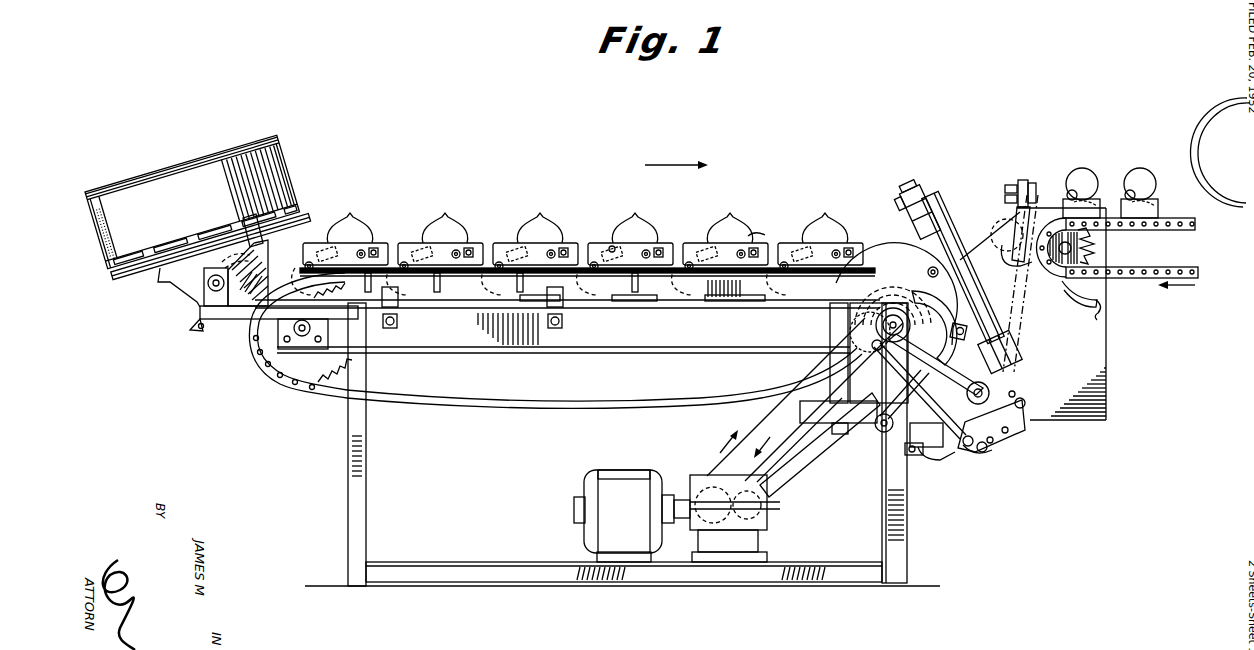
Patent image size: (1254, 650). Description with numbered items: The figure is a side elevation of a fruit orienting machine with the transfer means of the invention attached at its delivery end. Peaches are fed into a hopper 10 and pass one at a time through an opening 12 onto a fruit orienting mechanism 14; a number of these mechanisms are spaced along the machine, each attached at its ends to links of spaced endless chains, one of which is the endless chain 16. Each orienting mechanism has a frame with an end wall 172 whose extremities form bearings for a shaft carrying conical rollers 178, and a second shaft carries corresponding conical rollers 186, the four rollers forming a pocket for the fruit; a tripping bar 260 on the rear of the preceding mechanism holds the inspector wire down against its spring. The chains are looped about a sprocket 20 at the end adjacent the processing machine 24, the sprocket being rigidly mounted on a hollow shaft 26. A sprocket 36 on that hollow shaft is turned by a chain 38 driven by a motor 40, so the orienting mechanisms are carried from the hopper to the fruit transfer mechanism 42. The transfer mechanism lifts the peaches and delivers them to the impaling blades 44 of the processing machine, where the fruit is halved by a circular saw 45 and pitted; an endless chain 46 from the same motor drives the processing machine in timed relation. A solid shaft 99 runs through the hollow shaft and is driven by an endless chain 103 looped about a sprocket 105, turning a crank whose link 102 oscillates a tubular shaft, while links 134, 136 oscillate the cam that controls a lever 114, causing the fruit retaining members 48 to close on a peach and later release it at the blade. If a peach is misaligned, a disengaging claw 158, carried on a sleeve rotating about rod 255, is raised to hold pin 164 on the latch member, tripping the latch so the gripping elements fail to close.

The hopper 10 is at (279, 146).
The opening 12 is at (110, 270).
The fruit orienting mechanism 14 is at (335, 240).
The endless chain 16 is at (336, 387).
The sprocket 20 is at (838, 364).
The fruit processing machine 24 is at (1050, 197).
The hollow shaft 26 is at (856, 315).
The sprocket 36 is at (876, 338).
The chain 38 is at (754, 421).
The motor 40 is at (640, 470).
The fruit transfer mechanism 42 is at (945, 223).
The impaling blades 44 is at (1153, 212).
The circular saw 45 is at (1206, 150).
The endless chain 46 is at (1158, 268).
The fruit retaining members 48 is at (905, 235).
The solid rotatable shaft 99 is at (945, 338).
The link 102 is at (962, 392).
The endless chain 103 is at (805, 470).
The sprocket 105 is at (862, 330).
The lever 114 is at (1015, 424).
The link 134 is at (1018, 388).
The link 136 is at (878, 427).
The disengaging claw 158 is at (926, 453).
The pin 164 is at (970, 452).
The end wall 172 is at (611, 246).
The conical rollers 178 is at (709, 232).
The conical rollers 186 is at (760, 233).
The rod 255 is at (906, 450).
The tripping bar 260 is at (688, 303).